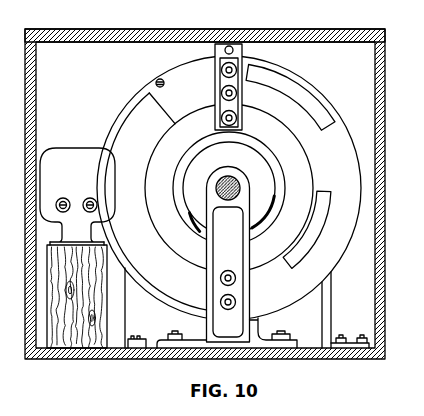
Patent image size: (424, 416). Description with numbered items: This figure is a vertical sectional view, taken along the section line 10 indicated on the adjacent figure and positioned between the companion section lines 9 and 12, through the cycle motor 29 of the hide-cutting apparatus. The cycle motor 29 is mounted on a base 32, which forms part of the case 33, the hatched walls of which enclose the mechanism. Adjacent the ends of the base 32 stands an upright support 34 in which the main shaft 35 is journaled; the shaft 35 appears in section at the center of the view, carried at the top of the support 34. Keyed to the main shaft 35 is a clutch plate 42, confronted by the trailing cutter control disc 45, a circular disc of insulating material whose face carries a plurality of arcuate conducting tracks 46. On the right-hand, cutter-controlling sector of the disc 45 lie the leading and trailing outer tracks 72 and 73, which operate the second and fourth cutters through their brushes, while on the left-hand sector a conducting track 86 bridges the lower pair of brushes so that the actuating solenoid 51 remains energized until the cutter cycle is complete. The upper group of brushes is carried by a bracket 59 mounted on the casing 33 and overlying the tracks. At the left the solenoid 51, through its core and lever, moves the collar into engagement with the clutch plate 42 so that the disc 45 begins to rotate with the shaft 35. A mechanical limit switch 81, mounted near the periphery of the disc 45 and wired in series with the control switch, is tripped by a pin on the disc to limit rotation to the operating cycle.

The section line indicator 9 is at (30, 6).
The section line indicator 12 is at (150, 6).
The section line 10 is at (255, 3).
The cycle motor 29 is at (354, 25).
The case 33 is at (216, 179).
The base 32 is at (94, 360).
The solenoid 51 is at (78, 148).
The trailing cutter control disc 45 is at (132, 95).
The leading outer track 72 is at (335, 123).
The trailing outer track 73 is at (320, 229).
The arcuate conducting tracks 46 is at (311, 171).
The conducting track 86 is at (152, 212).
The clutch plate 42 is at (183, 161).
The support 34 is at (250, 271).
The main shaft 35 is at (231, 176).
The limit switch 81 is at (260, 327).
The bracket 59 is at (244, 108).